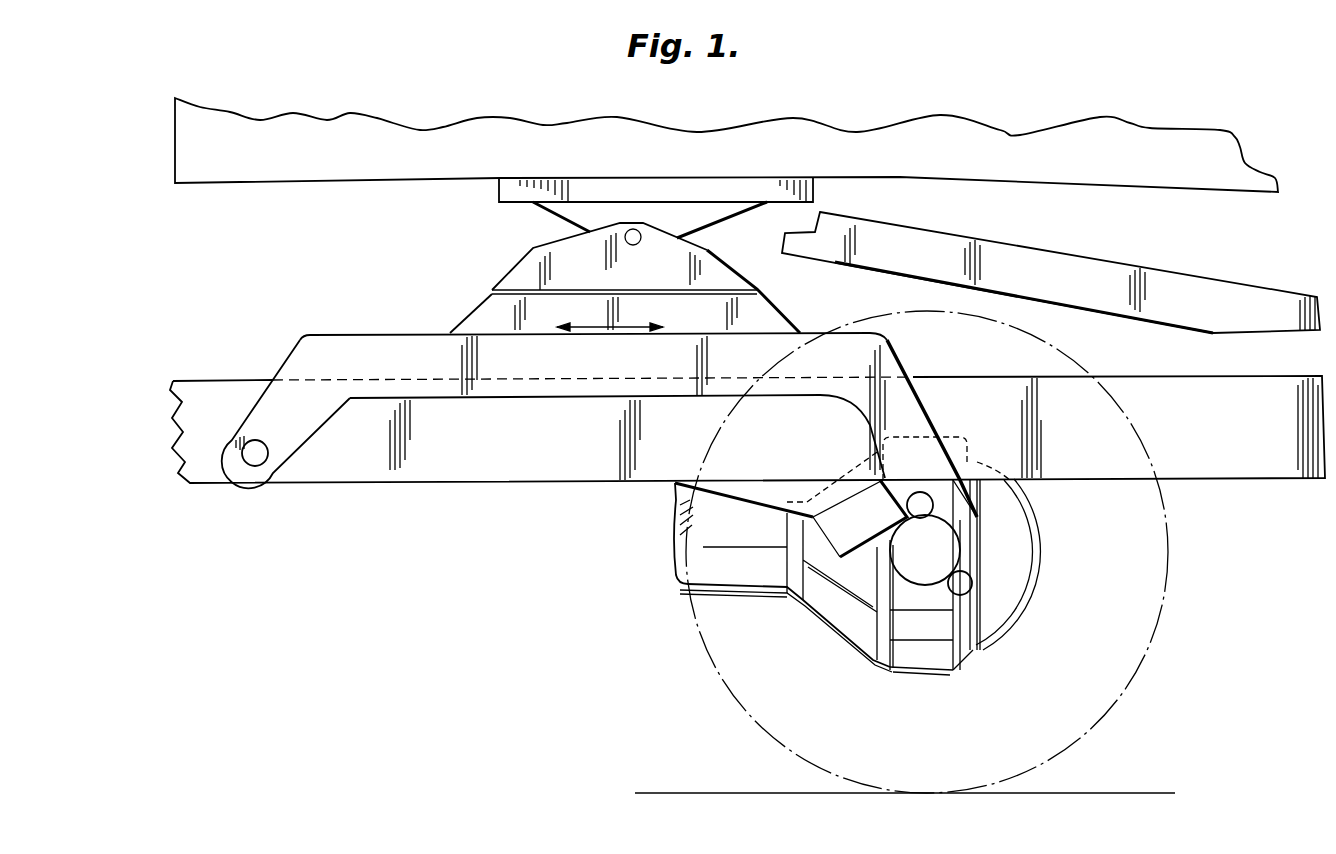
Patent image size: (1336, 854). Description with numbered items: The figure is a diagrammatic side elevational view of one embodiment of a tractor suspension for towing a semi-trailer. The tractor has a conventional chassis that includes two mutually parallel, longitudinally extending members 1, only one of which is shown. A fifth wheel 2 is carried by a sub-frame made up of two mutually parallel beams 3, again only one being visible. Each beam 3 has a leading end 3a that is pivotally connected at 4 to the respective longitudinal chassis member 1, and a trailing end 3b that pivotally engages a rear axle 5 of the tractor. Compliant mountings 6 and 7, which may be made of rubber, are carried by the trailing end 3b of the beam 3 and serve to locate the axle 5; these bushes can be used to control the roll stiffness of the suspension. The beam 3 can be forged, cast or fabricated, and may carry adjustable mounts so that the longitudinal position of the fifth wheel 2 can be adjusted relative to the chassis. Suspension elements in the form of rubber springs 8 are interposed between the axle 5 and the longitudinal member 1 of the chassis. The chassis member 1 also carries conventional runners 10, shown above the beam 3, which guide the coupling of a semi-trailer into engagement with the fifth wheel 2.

The longitudinal chassis member 1 is at (1282, 390).
The fifth wheel 2 is at (526, 234).
The beam 3 is at (808, 348).
The leading end 3a is at (280, 373).
The trailing end 3b is at (927, 427).
The pivotal connection 4 is at (257, 461).
The rear axle 5 is at (897, 563).
The compliant mounting 6 is at (927, 500).
The compliant mounting 7 is at (968, 583).
The rubber spring 8 is at (823, 520).
The runner 10 is at (1032, 262).